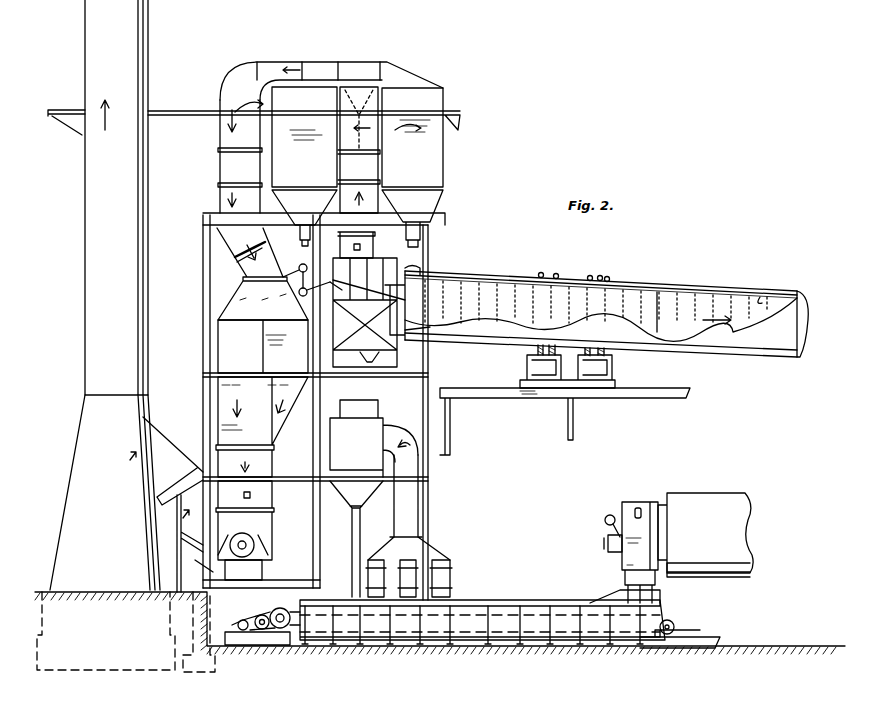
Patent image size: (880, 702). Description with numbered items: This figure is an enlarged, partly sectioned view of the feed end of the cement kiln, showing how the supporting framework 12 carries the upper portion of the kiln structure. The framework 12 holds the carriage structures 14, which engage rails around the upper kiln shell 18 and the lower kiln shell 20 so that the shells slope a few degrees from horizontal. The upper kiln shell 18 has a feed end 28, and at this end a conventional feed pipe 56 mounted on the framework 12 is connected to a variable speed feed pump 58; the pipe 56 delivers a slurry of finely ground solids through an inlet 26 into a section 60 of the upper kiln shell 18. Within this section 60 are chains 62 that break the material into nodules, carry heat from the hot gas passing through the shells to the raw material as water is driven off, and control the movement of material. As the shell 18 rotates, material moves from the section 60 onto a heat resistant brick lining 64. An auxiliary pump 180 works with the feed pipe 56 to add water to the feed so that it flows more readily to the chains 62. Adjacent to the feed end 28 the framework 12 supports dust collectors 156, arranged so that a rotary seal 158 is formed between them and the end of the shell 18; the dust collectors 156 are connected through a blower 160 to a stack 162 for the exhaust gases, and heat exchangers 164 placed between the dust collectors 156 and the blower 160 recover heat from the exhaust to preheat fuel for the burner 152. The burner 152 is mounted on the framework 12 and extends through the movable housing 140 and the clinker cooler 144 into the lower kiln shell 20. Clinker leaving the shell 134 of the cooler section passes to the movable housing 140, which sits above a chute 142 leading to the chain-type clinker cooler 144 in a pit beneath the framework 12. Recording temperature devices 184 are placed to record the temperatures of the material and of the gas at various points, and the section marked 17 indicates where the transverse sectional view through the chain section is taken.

The supporting framework 12 is at (203, 370).
The carriage structures 14 is at (528, 370).
The section line 17- 17 is at (513, 240).
The upper kiln shell 18 is at (765, 355).
The lower kiln shell 20 is at (725, 493).
The inlet 26 is at (420, 270).
The feed end 28 is at (420, 321).
The feed pipe 56 is at (432, 278).
The variable speed feed pump 58 is at (300, 266).
The section of the upper kiln shell 60 is at (593, 270).
The chains 62 is at (512, 284).
The heat resistant brick lining 64 is at (760, 297).
The shell 134 is at (720, 578).
The movable housing 140 is at (645, 502).
The chute 142 is at (700, 634).
The clinker cooler 144 is at (475, 640).
The burner 152 is at (616, 550).
The dust collectors 156 is at (394, 94).
The rotary seal 158 is at (372, 315).
The blower 160 is at (262, 548).
The stack 162 is at (85, 213).
The heat exchangers 164 is at (263, 346).
The auxiliary pump 180 is at (300, 292).
The recording temperature devices 184 is at (360, 247).